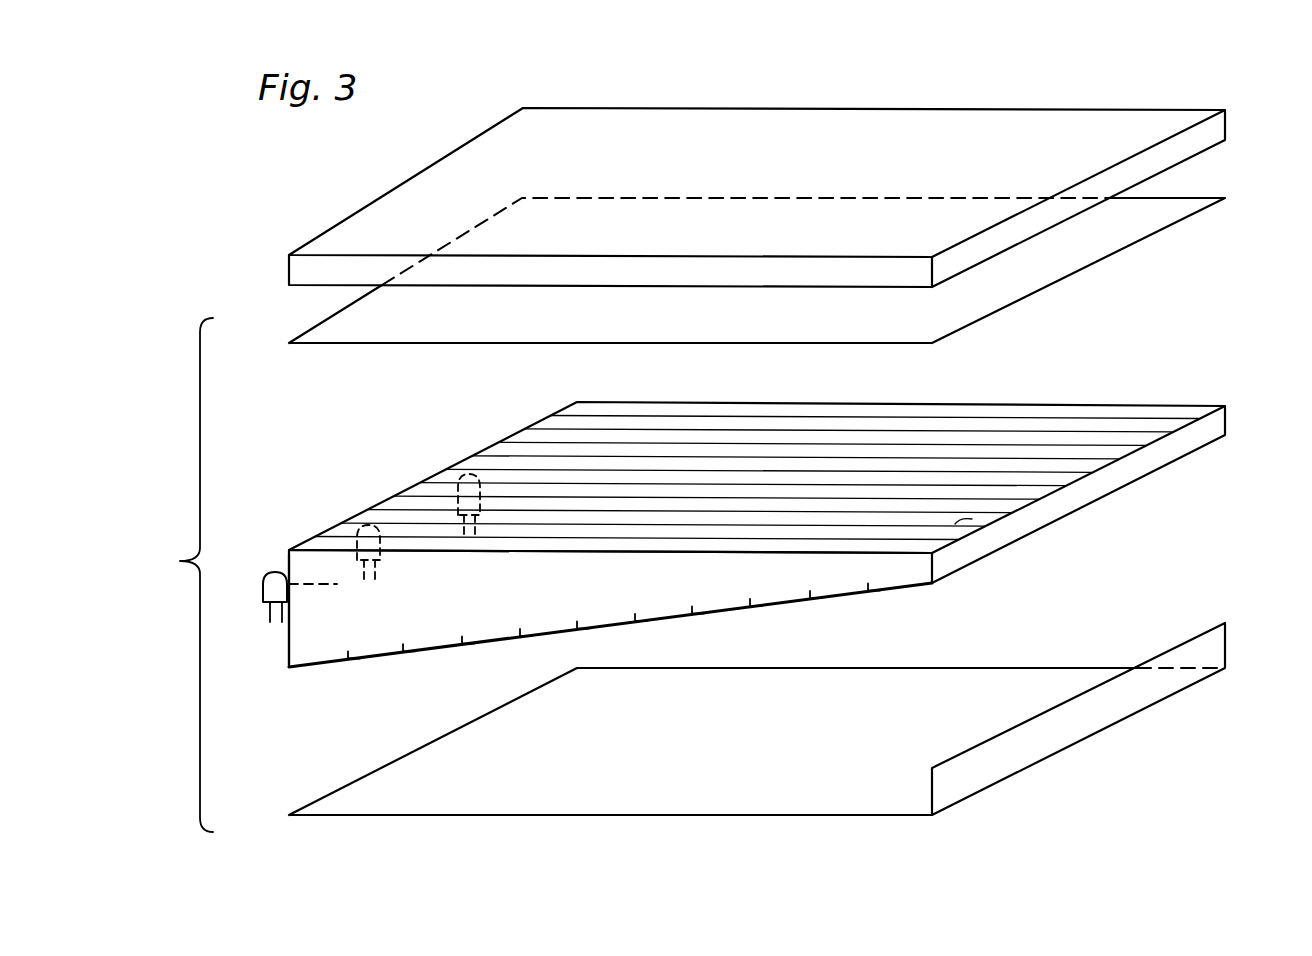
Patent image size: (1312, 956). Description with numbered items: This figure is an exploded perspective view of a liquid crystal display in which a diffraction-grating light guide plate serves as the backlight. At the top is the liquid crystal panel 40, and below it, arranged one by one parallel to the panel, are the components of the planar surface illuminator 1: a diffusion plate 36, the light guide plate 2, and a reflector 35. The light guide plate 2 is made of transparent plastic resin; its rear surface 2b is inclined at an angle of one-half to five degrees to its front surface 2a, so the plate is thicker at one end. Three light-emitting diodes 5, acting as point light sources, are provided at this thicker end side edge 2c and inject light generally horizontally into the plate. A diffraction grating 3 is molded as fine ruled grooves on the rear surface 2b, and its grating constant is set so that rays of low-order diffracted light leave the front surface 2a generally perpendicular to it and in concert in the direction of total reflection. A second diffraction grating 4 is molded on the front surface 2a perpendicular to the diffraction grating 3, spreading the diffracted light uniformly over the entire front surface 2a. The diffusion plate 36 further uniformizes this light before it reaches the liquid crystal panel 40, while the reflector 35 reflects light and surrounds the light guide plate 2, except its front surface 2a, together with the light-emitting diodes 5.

The planar surface illuminator 1 is at (188, 575).
The light guide plate 2 is at (1228, 419).
The front surface 2a is at (988, 417).
The rear surface 2b is at (795, 602).
The thicker end side edge 2c is at (289, 644).
The diffraction grating 3 is at (547, 630).
The diffraction grating 4 is at (955, 524).
The light-emitting diodes 5 is at (262, 586).
The reflector 35 is at (1045, 676).
The diffusion plate 36 is at (1170, 207).
The liquid crystal panel 40 is at (1212, 128).